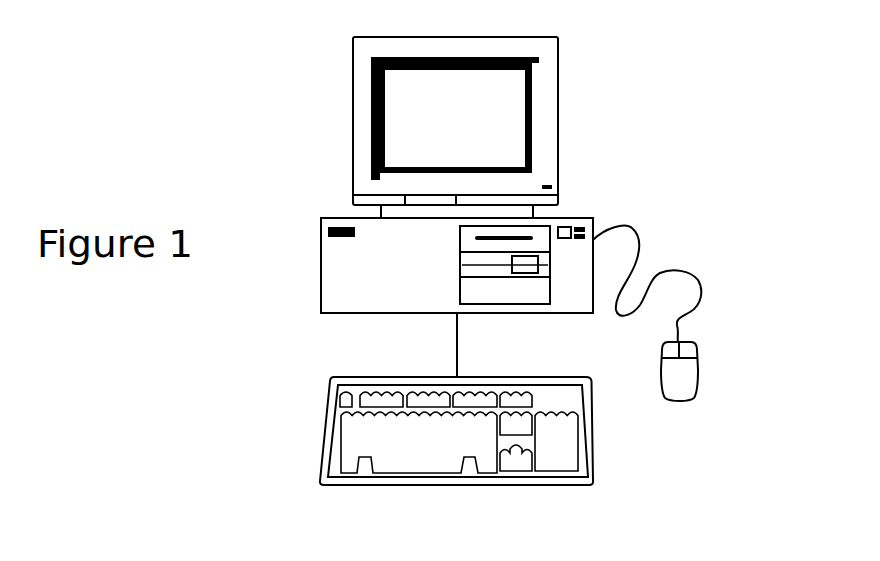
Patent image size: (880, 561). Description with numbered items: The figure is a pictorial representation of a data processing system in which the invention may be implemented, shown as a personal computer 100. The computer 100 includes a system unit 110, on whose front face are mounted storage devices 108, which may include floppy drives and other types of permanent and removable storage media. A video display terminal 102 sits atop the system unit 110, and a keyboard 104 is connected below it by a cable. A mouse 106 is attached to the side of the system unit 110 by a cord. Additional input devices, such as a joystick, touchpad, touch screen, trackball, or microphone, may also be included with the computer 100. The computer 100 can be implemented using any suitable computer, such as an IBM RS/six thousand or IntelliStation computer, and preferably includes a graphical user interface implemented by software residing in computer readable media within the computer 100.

The computer 100 is at (672, 172).
The video display terminal 102 is at (558, 93).
The keyboard 104 is at (568, 485).
The mouse 106 is at (697, 356).
The storage devices 108 is at (460, 262).
The system unit 110 is at (457, 287).